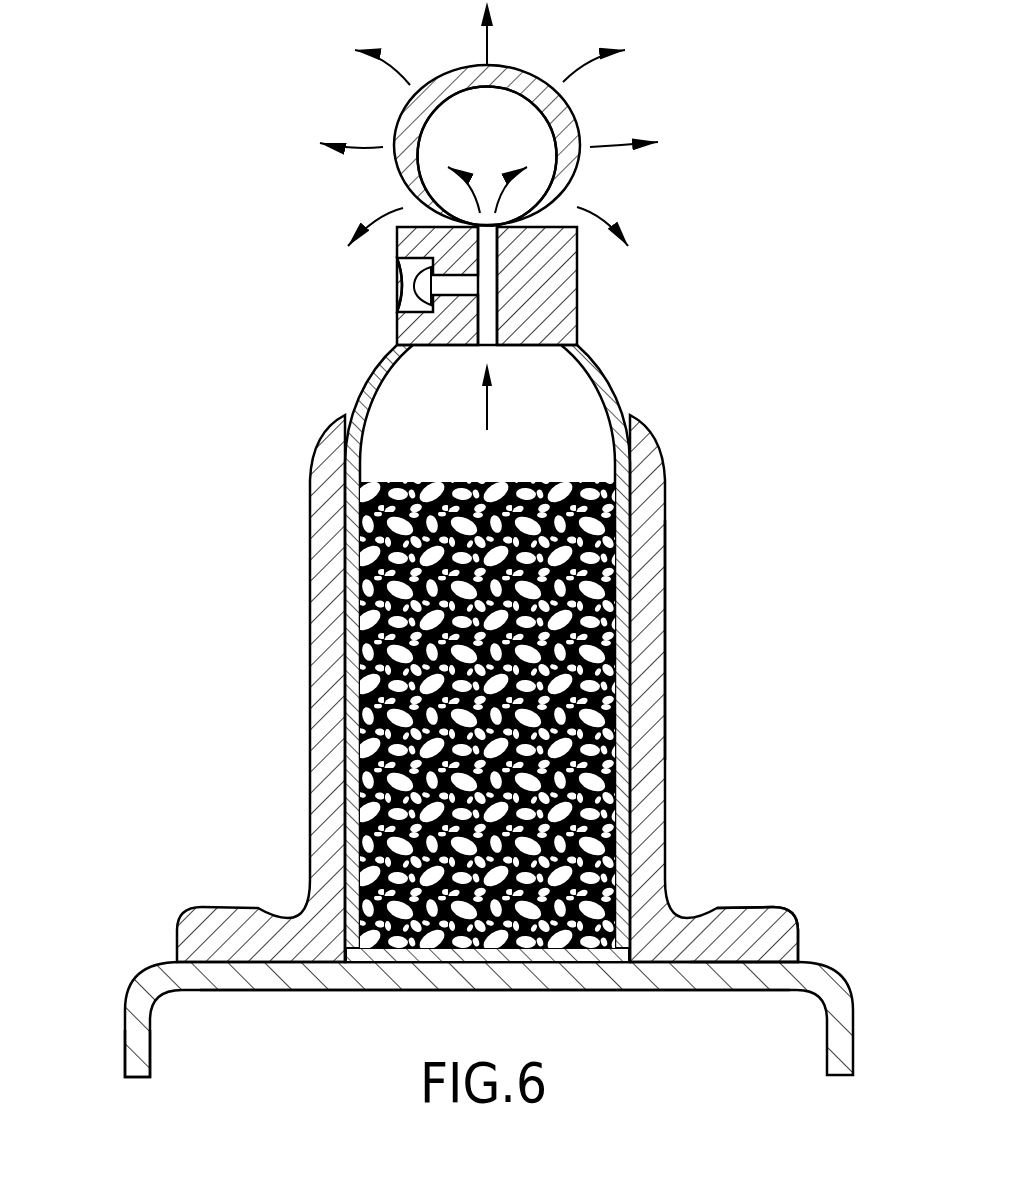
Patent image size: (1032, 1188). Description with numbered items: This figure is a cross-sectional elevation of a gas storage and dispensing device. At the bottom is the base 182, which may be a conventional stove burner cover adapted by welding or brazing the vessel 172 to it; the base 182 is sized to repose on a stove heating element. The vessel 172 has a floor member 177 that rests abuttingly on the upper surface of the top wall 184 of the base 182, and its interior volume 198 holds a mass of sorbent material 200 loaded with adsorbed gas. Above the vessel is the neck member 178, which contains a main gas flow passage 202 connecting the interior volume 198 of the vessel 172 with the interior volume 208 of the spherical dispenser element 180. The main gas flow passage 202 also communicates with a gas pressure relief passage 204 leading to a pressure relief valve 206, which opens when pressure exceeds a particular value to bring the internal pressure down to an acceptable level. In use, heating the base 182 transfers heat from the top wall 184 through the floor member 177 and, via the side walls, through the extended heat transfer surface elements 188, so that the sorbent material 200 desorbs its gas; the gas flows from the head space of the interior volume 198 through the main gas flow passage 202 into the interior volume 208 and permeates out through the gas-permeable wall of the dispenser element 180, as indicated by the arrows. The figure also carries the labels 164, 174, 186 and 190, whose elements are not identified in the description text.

The outer housing 164 is at (310, 630).
The vessel 172 is at (640, 717).
The inner container 174 is at (380, 387).
The floor member 177 is at (517, 962).
The neck member 178 is at (570, 270).
The spherical dispenser element 180 is at (530, 67).
The base 182 is at (833, 973).
The top wall 184 is at (707, 993).
The base leg 186 is at (123, 1053).
The extended heat transfer surface elements 188 is at (662, 633).
The flange 190 is at (722, 915).
The interior volume 198 is at (578, 402).
The sorbent material 200 is at (580, 563).
The main gas flow passage 202 is at (487, 338).
The gas pressure relief passage 204 is at (450, 283).
The pressure relief valve 206 is at (398, 325).
The interior volume 208 is at (440, 128).